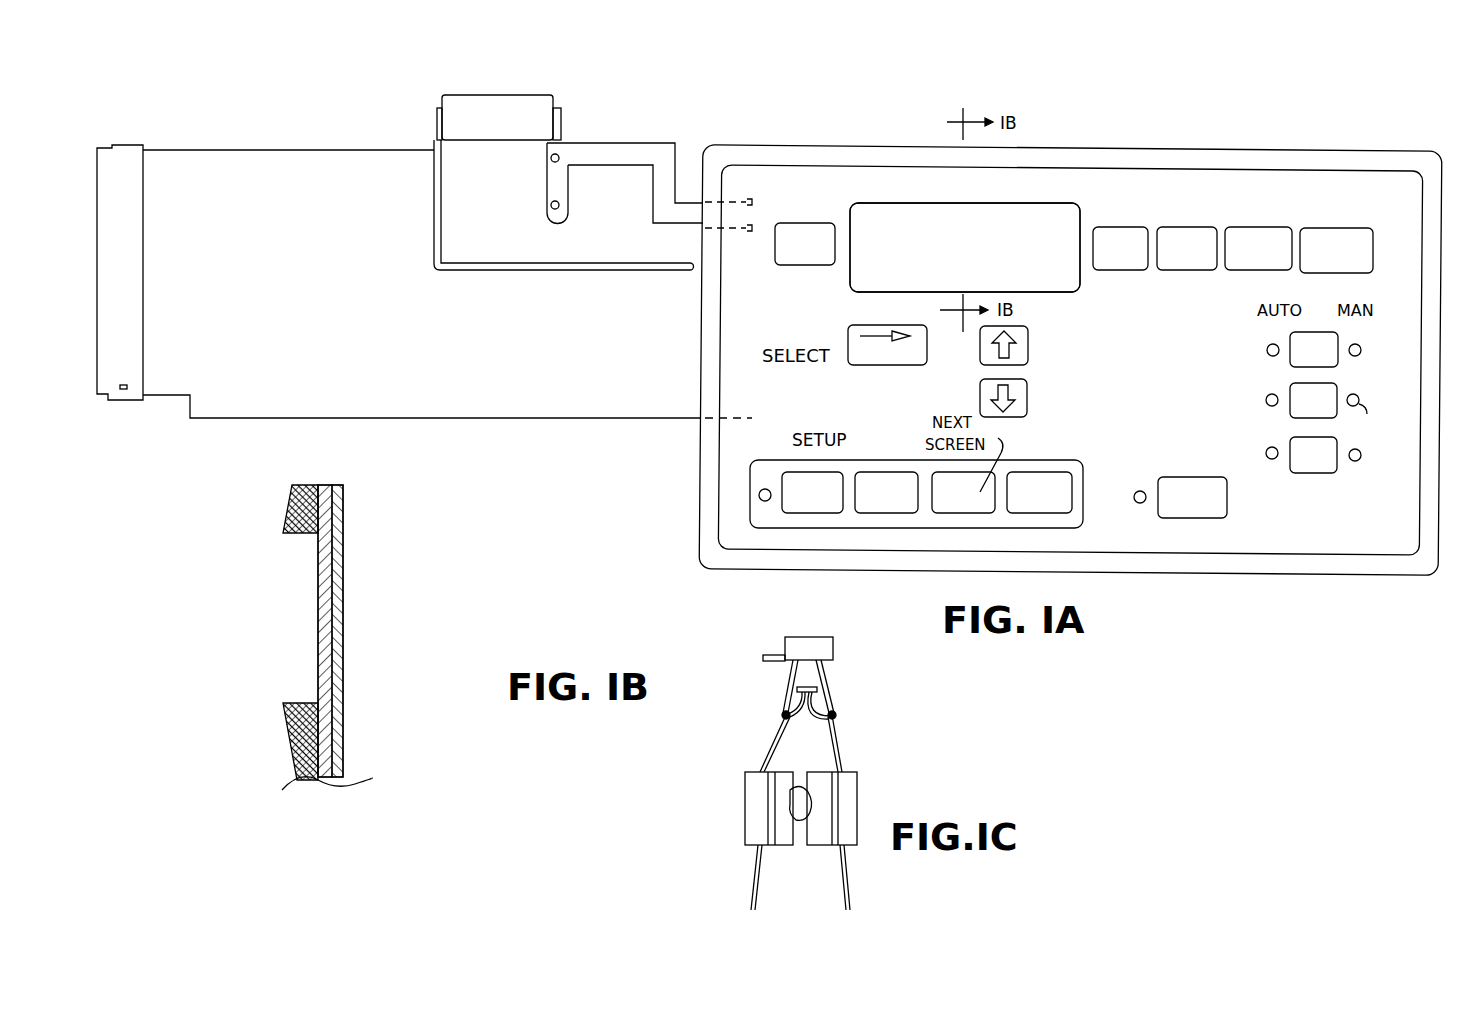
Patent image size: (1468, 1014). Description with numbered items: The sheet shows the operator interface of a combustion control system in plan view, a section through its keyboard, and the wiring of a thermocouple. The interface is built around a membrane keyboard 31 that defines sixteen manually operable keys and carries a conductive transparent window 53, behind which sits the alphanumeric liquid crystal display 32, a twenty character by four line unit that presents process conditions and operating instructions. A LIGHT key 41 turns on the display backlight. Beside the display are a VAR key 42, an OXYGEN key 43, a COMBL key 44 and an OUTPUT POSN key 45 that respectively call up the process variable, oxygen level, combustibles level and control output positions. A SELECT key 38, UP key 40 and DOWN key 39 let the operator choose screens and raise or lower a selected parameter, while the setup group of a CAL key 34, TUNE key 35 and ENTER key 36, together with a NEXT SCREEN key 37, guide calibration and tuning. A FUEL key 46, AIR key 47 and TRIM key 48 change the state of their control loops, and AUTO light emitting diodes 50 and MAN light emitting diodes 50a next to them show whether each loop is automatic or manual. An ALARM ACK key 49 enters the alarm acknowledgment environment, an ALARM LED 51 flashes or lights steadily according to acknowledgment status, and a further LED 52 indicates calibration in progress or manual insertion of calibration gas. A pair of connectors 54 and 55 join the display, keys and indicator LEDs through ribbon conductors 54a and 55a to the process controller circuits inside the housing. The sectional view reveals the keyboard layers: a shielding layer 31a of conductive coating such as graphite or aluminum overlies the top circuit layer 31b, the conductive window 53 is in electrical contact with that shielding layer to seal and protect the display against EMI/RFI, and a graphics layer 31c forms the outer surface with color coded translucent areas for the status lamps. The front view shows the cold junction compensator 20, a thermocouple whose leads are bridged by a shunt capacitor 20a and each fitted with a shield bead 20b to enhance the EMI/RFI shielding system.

In FIG. 1C, the cold junction compensator 20 is at (825, 650).
In FIG. 1C, the shunt capacitor 20a is at (820, 690).
In FIG. 1C, the shield bead 20b is at (750, 790).
In FIG. 1A, the membrane keyboard 31 is at (1203, 195).
In FIG. 1B, the membrane keyboard 31 is at (342, 513).
In FIG. 1B, the shielding layer 31a is at (323, 487).
In FIG. 1B, the top circuit layer 31b is at (315, 537).
In FIG. 1B, the graphics layer 31c is at (342, 740).
In FIG. 1A, the alphanumeric display 32 is at (897, 223).
In FIG. 1A, the CAL key 34 is at (803, 513).
In FIG. 1A, the TUNE key 35 is at (880, 513).
In FIG. 1A, the ENTER key 36 is at (1070, 487).
In FIG. 1A, the NEXT SCREEN key 37 is at (968, 513).
In FIG. 1A, the SELECT key 38 is at (883, 365).
In FIG. 1A, the DOWN key 39 is at (1028, 398).
In FIG. 1A, the UP key 40 is at (1028, 345).
In FIG. 1A, the LIGHT key 41 is at (798, 270).
In FIG. 1A, the VAR key 42 is at (1100, 270).
In FIG. 1A, the OXYGEN key 43 is at (1164, 270).
In FIG. 1A, the COMBL key 44 is at (1232, 270).
In FIG. 1A, the OUTPUT POSN key 45 is at (1306, 273).
In FIG. 1A, the FUEL key 46 is at (1288, 342).
In FIG. 1A, the AIR key 47 is at (1350, 378).
In FIG. 1A, the TRIM key 48 is at (1330, 473).
In FIG. 1A, the ALARM ACK key 49 is at (1222, 518).
In FIG. 1A, the AUTO light emitting diodes 50 is at (1267, 449).
In FIG. 1A, the MAN light emitting diodes 50a is at (1361, 347).
In FIG. 1A, the ALARM LED indicator 51 is at (1138, 505).
In FIG. 1A, the calibration light emitting diode 52 is at (758, 497).
In FIG. 1A, the transparent window 53 is at (1055, 205).
In FIG. 1B, the transparent window 53 is at (322, 603).
In FIG. 1A, the connector 54 is at (497, 110).
In FIG. 1A, the ribbon conductor 54a is at (455, 158).
In FIG. 1A, the connector 55 is at (128, 155).
In FIG. 1A, the ribbon conductor 55a is at (275, 165).